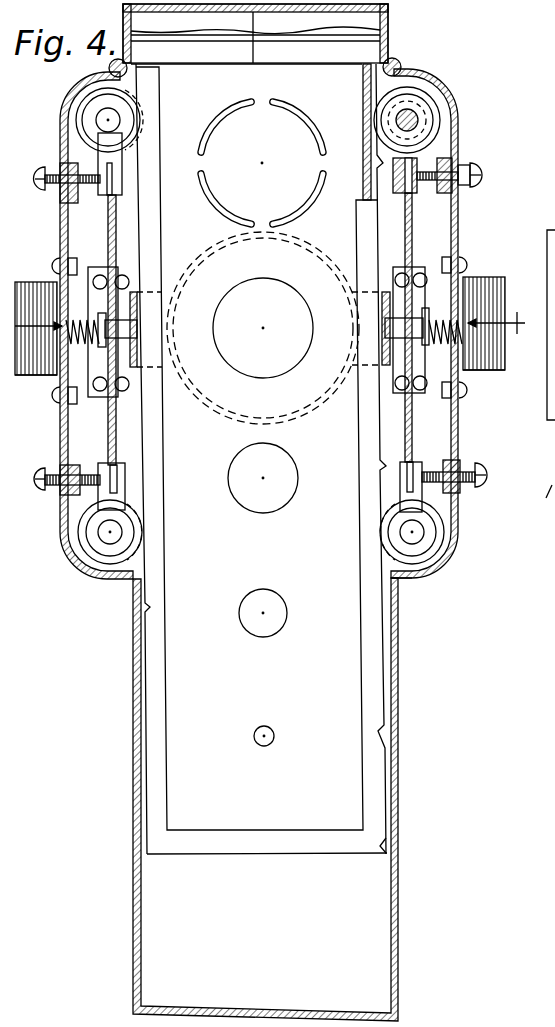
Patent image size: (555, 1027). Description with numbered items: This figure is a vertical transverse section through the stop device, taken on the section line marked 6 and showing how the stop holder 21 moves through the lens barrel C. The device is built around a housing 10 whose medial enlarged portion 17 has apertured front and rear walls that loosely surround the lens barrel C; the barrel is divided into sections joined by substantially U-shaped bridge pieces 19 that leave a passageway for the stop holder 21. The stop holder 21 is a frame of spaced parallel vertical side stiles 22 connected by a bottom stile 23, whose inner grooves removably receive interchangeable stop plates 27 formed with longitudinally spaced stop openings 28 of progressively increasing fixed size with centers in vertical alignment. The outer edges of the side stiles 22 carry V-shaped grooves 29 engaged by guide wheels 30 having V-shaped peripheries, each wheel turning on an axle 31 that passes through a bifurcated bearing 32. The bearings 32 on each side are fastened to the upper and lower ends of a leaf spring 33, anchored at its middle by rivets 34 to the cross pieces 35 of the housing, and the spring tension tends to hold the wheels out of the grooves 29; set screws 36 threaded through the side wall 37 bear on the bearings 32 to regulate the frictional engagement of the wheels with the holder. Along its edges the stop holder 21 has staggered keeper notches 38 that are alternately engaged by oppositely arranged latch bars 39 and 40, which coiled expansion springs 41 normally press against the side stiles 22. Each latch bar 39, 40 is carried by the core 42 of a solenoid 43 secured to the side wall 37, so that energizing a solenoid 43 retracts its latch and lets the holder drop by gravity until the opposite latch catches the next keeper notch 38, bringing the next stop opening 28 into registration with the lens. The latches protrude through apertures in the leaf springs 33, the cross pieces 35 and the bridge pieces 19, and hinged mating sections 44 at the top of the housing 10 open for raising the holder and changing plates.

The section line 6- 6 is at (272, 324).
The housing 10 is at (399, 579).
The medial enlarged portion 17 is at (444, 218).
The bridge pieces 19 is at (137, 353).
The stop holder 21 is at (392, 853).
The side stiles 22 is at (156, 723).
The bottom stile 23 is at (262, 848).
The stop plates 27 is at (345, 758).
The stop openings 28 is at (292, 287).
The V-shaped grooves 29 is at (370, 86).
The guide wheels 30 is at (131, 100).
The axle 31 is at (113, 121).
The bifurcated bearing 32 is at (110, 156).
The leaf spring 33 is at (116, 438).
The rivets 34 is at (118, 280).
The cross pieces 35 is at (115, 305).
The set screws 36 is at (72, 197).
The side wall 37 is at (66, 434).
The keeper notches 38 is at (144, 328).
The latch bar 39 is at (390, 328).
The latch bar 40 is at (137, 328).
The coiled expansion springs 41 is at (70, 330).
The core 42 is at (260, 326).
The solenoid 43 is at (34, 375).
The hinged mating sections 44 is at (272, 52).
The lens barrel C is at (302, 420).